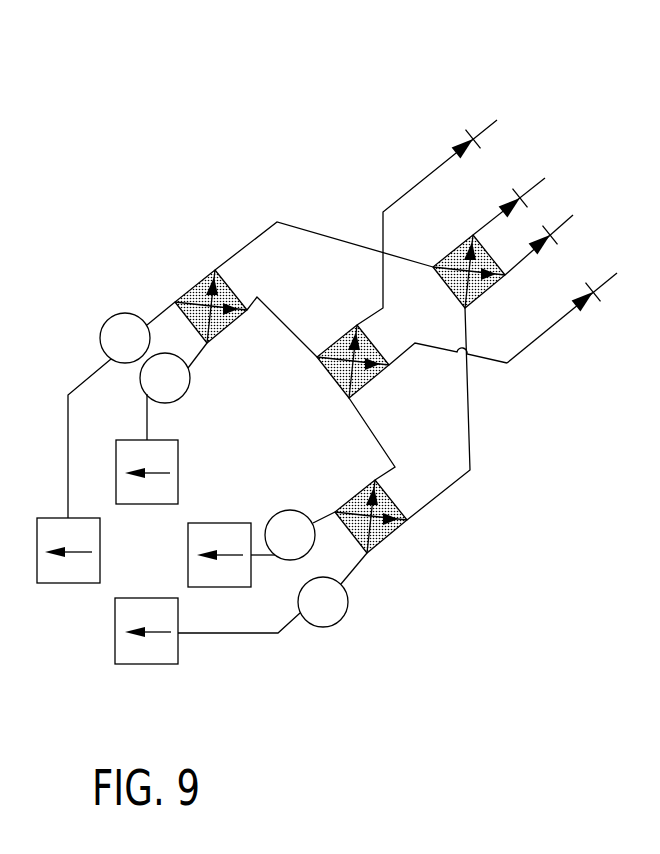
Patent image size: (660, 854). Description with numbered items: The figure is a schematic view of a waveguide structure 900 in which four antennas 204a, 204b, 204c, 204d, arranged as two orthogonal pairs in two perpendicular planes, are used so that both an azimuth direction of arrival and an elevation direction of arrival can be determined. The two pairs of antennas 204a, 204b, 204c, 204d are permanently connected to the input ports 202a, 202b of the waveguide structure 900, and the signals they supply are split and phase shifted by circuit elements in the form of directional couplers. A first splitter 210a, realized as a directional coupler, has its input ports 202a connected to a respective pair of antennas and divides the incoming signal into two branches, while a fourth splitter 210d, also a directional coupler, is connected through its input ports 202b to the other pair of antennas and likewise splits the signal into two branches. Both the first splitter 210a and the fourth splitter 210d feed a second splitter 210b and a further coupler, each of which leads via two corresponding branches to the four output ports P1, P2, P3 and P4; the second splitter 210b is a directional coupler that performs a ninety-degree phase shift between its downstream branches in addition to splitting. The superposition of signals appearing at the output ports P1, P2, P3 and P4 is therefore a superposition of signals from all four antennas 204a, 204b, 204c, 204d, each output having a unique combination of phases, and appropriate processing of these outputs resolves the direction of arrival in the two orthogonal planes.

The waveguide structure 900 is at (380, 109).
The input port 202a is at (153, 310).
The input port 202b is at (327, 511).
The antenna 204a is at (52, 517).
The antenna 204b is at (230, 522).
The antenna 204c is at (179, 452).
The antenna 204d is at (157, 665).
The first splitter 210a is at (200, 282).
The second splitter 210b is at (384, 380).
The fourth splitter 210d is at (393, 540).
The output port P1 is at (485, 124).
The output port P2 is at (519, 194).
The output port P3 is at (552, 233).
The output port P4 is at (574, 308).